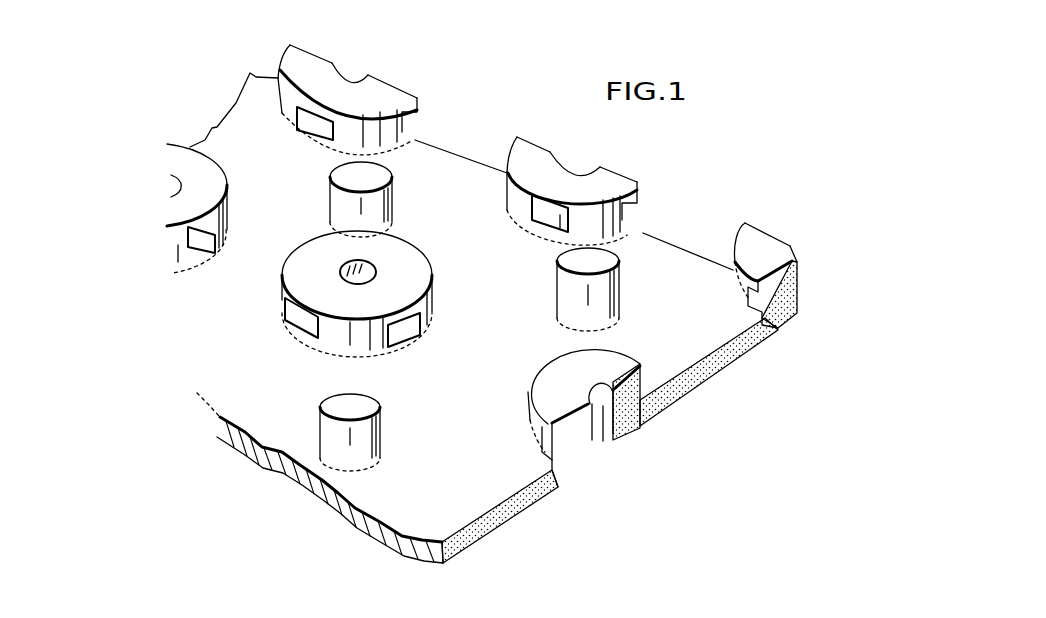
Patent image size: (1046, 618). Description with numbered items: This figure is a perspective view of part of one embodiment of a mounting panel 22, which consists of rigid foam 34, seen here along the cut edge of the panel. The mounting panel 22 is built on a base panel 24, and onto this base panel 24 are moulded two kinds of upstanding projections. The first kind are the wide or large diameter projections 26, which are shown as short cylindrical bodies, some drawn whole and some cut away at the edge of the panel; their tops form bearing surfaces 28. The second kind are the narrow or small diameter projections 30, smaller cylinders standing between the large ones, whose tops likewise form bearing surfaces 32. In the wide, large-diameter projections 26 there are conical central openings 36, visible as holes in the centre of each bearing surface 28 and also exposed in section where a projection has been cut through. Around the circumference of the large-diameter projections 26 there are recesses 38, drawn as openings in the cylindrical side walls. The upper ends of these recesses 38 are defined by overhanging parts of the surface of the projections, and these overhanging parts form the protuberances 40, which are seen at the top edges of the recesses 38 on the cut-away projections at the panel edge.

The mounting panel 22 is at (286, 511).
The base panel 24 is at (684, 336).
The wide or large diameter projections 26 is at (598, 225).
The bearing surfaces 28 is at (598, 188).
The narrow or small diameter projections 30 is at (606, 292).
The bearing surfaces 32 is at (578, 263).
The rigid foam 34 is at (687, 387).
The conical central openings 36 is at (365, 266).
The recesses 38 is at (415, 118).
The protuberances 40 is at (757, 277).